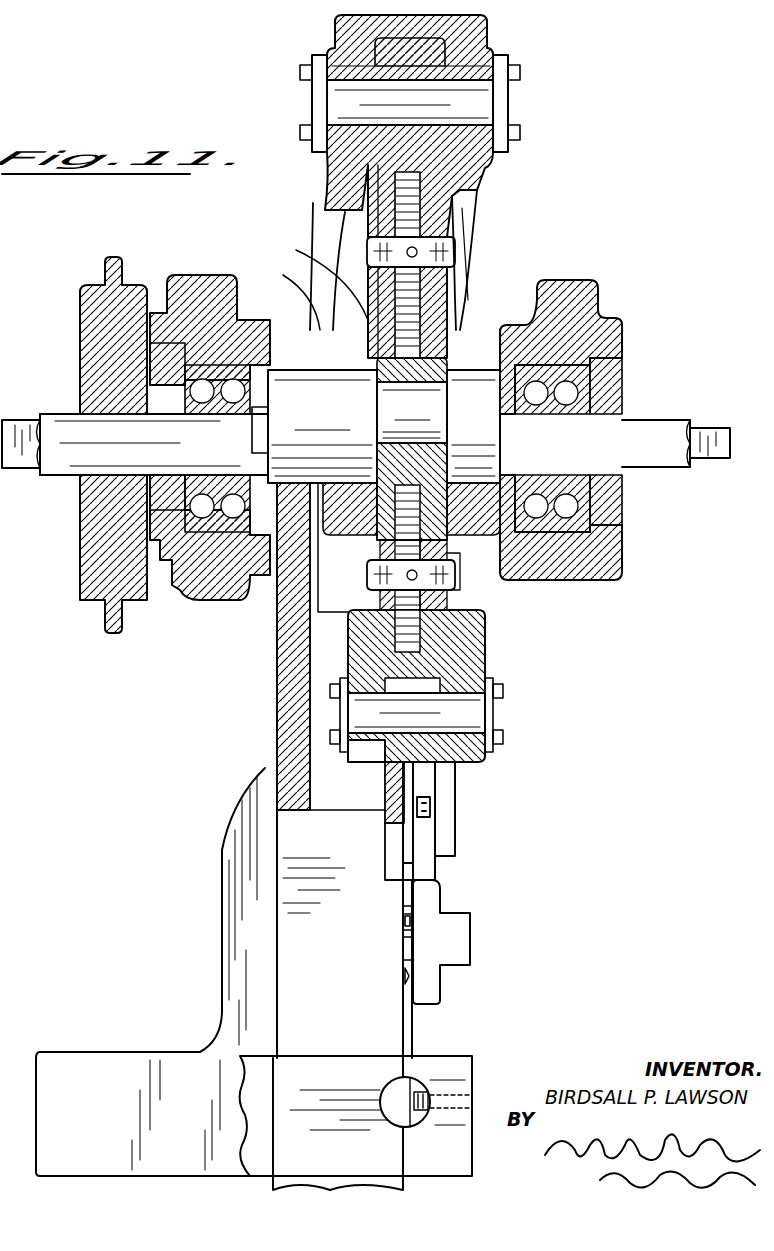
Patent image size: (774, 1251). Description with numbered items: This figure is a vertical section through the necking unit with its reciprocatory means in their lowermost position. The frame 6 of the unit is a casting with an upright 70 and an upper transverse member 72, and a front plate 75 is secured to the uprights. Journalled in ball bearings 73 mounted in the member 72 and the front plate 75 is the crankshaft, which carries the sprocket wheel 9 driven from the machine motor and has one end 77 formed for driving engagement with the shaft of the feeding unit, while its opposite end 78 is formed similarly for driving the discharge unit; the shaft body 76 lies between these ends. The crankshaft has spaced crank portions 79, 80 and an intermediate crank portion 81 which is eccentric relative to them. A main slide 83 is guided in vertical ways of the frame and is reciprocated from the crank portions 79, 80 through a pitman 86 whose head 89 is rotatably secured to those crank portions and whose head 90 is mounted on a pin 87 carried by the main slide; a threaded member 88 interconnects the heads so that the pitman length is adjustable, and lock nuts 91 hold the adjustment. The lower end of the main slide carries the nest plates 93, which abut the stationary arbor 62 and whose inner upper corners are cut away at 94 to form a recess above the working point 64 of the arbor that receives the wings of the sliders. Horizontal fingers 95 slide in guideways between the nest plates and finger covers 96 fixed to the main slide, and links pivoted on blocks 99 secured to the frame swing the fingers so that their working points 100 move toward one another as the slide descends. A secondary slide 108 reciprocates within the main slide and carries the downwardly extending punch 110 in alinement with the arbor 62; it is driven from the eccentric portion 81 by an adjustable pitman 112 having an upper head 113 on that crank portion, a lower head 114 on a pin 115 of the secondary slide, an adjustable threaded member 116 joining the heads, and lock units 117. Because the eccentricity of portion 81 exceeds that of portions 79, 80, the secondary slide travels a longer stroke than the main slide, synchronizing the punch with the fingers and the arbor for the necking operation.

The frame 6 is at (118, 1070).
The sprocket wheel 9 is at (110, 270).
The arbor 62 is at (403, 1014).
The working point 64 is at (403, 980).
The upright 70 is at (240, 792).
The upper transverse member 72 is at (190, 610).
The ball bearings 73 is at (268, 330).
The front plate 75 is at (600, 292).
The shaft 76 is at (95, 426).
The crankshaft end 77 is at (25, 452).
The opposite end of crankshaft 78 is at (718, 462).
The crank portion 79 is at (325, 487).
The crank portion 80 is at (472, 387).
The intermediate crank portion 81 is at (420, 407).
The main slide 83 is at (468, 216).
The pitman 86 is at (463, 232).
The pin 87 is at (480, 108).
The threaded member 88 is at (447, 262).
The pitman head 89 is at (360, 290).
The pitman head 90 is at (465, 212).
The lock nuts 91 is at (373, 264).
The nest plates 93 is at (403, 962).
The cut-away corners 94 is at (403, 938).
The fingers 95 is at (403, 910).
The finger covers 96 is at (425, 846).
The blocks 99 is at (425, 914).
The working point 100 is at (403, 922).
The secondary slide 108 is at (372, 804).
The punch 110 is at (405, 882).
The adjustable pitman 112 is at (482, 602).
The upper head 113 is at (375, 527).
The lower head 114 is at (470, 674).
The pin 115 is at (470, 719).
The adjustable threaded member 116 is at (382, 588).
The lock units 117 is at (462, 585).